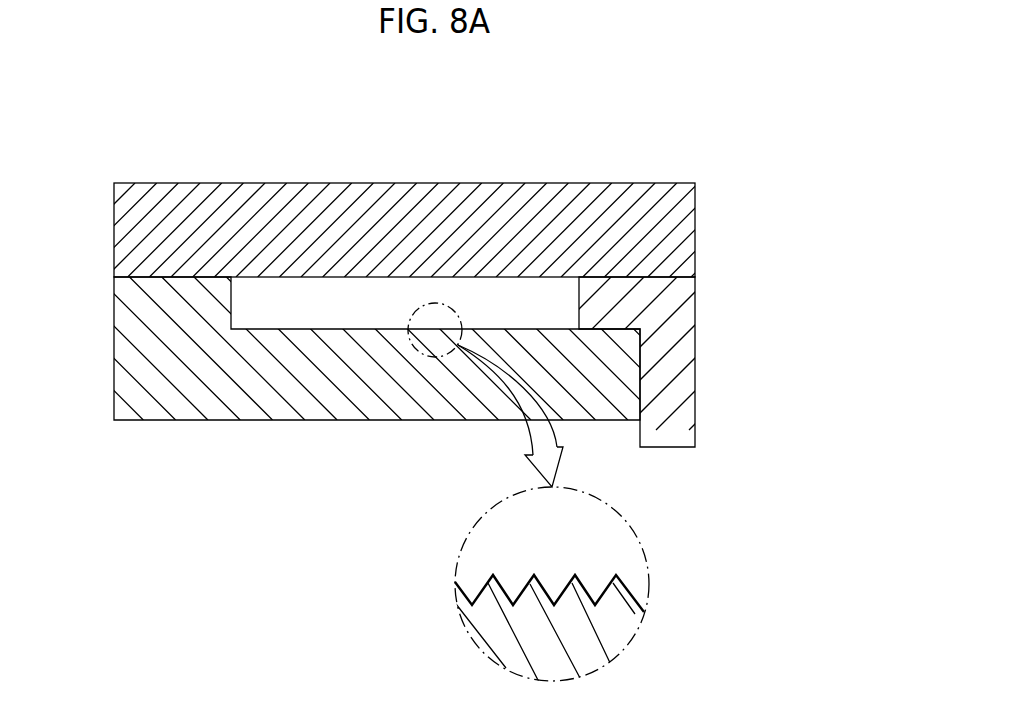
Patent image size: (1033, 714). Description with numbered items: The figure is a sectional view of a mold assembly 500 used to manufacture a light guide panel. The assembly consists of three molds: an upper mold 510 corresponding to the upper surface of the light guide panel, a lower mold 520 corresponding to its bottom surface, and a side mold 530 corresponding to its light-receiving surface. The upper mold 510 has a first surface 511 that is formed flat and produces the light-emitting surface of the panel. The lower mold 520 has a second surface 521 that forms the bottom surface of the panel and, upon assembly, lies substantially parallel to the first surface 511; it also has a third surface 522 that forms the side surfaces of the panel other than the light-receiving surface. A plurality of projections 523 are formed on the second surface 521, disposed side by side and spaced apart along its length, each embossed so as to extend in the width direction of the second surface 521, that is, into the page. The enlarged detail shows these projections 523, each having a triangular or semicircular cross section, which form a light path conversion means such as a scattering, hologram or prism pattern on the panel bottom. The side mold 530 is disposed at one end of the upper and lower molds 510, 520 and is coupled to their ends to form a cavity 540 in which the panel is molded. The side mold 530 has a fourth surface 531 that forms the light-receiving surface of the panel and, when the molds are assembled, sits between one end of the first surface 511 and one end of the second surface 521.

The mold assembly 500 is at (735, 163).
The upper mold 510 is at (415, 193).
The first surface 511 is at (410, 272).
The lower mold 520 is at (177, 405).
The second surface 521 is at (377, 330).
The third surface 522 is at (232, 303).
The projections 523 is at (588, 587).
The side mold 530 is at (686, 390).
The fourth surface 531 is at (576, 302).
The cavity 540 is at (477, 293).